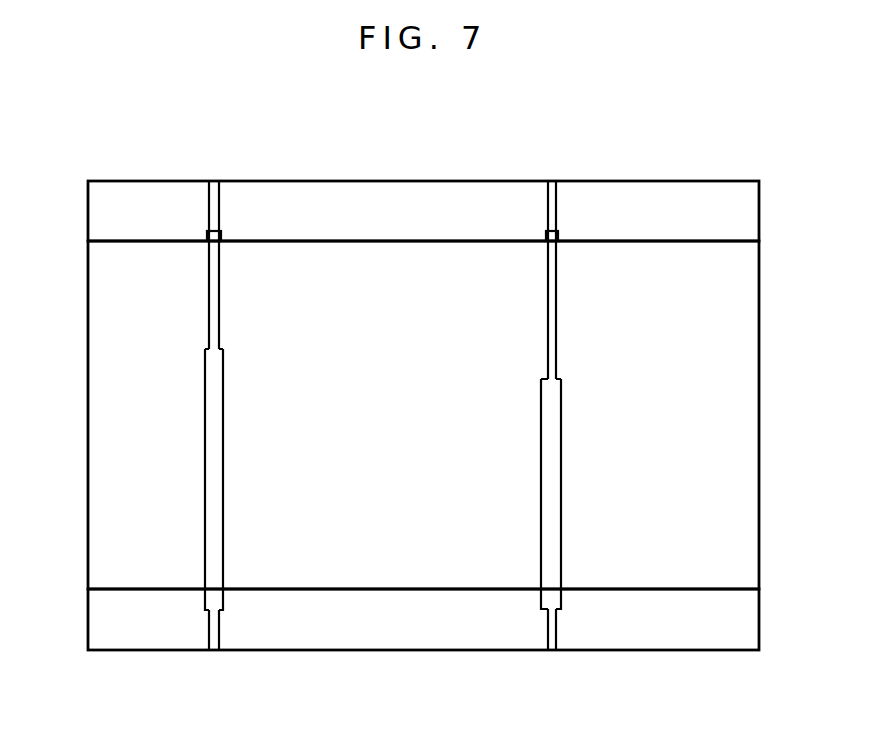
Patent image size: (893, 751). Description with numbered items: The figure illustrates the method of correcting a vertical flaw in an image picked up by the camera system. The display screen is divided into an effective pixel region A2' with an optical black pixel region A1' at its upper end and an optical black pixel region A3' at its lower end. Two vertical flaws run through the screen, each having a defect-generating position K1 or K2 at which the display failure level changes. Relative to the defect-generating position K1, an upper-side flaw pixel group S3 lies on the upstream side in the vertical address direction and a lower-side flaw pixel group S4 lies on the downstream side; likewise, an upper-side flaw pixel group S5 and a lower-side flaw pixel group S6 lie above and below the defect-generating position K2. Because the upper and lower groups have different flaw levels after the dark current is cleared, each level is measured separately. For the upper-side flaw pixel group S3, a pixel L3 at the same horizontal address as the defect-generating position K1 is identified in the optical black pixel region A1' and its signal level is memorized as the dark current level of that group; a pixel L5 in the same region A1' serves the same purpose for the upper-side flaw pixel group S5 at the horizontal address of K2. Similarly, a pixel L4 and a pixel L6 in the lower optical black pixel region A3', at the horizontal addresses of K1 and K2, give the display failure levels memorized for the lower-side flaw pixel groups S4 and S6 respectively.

The optical black pixel region A1' is at (463, 210).
The effective pixel region A2' is at (463, 415).
The optical black pixel region A3' is at (463, 619).
The upper-side flaw pixel group S3 is at (213, 292).
The lower-side flaw pixel group S4 is at (213, 474).
The upper-side flaw pixel group S5 is at (553, 292).
The lower-side flaw pixel group S6 is at (553, 469).
The defect-generating position K1 is at (210, 350).
The defect-generating position K2 is at (555, 375).
The pixel L3 is at (209, 234).
The pixel L4 is at (212, 600).
The pixel L5 is at (557, 232).
The pixel L6 is at (552, 598).